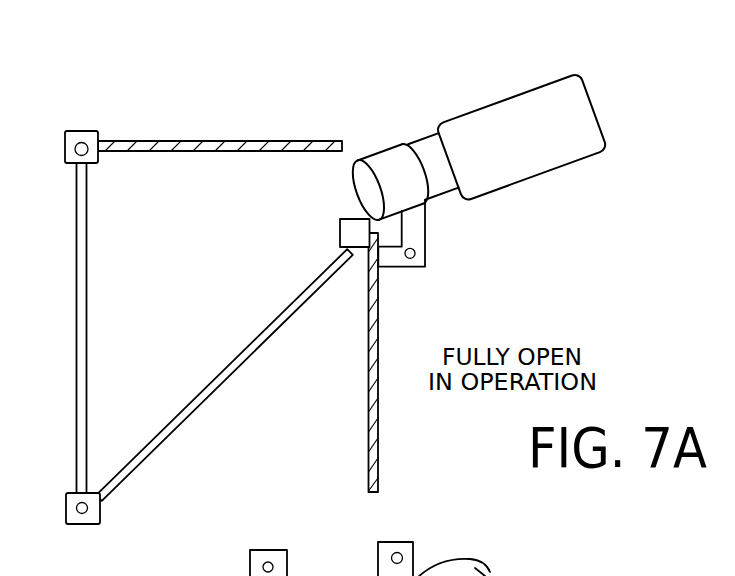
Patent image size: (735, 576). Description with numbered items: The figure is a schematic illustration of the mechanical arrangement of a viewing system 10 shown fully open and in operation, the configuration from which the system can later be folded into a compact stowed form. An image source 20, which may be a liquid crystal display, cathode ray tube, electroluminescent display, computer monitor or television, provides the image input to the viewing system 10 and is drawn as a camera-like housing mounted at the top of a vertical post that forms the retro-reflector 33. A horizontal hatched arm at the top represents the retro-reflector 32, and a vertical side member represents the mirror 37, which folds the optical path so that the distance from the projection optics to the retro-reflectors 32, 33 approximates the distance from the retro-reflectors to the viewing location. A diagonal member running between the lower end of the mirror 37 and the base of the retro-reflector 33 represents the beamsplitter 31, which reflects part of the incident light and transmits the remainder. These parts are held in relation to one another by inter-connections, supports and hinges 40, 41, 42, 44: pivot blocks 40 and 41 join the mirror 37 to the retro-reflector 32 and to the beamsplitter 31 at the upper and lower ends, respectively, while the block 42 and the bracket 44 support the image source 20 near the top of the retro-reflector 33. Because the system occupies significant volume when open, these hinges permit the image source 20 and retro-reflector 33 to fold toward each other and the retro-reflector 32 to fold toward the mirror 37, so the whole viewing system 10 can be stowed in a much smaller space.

The viewing system 10 is at (414, 453).
The image source 20 is at (533, 176).
The beamsplitter 31 is at (185, 420).
The retro-reflector 32 is at (288, 141).
The retro-reflector 33 is at (378, 349).
The mirror 37 is at (86, 392).
The hinge and mechanical support 40 is at (107, 93).
The hinge and mechanical support 41 is at (82, 525).
The hinge and mechanical support 42 is at (340, 232).
The hinge and mechanical support 44 is at (425, 243).